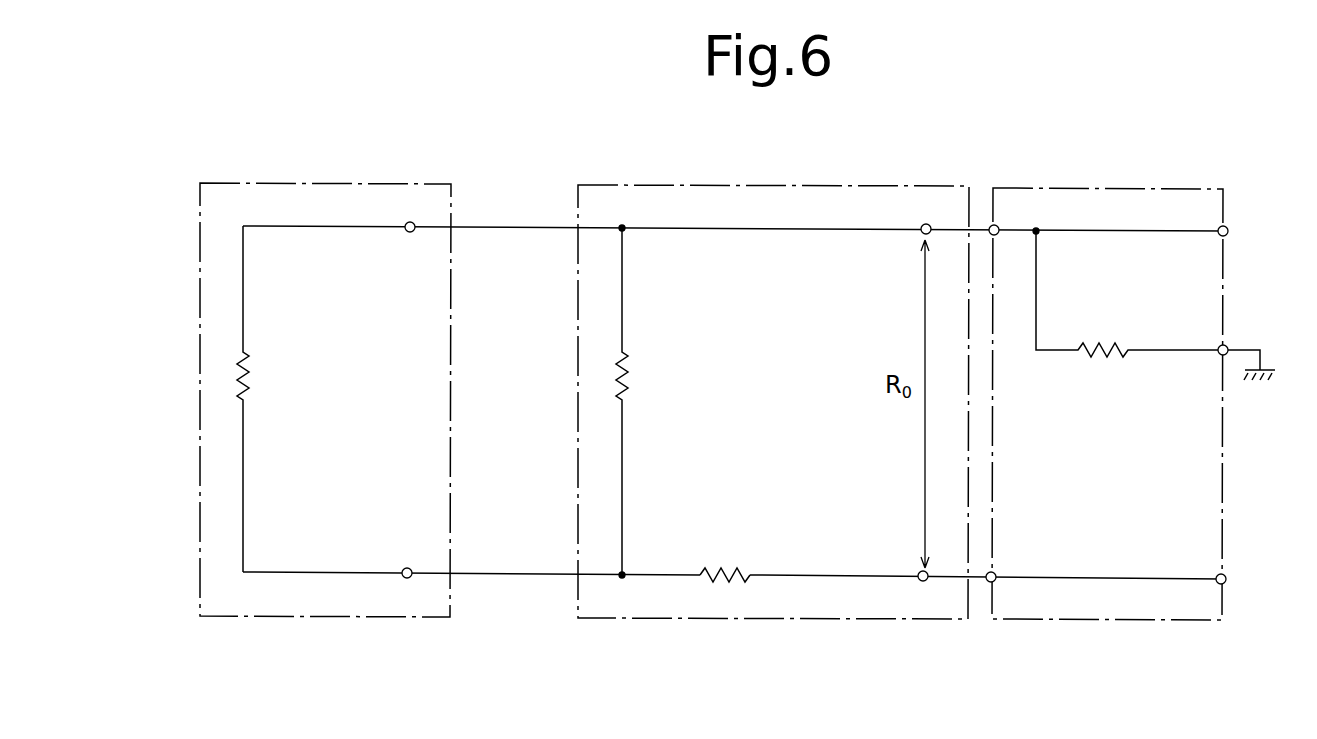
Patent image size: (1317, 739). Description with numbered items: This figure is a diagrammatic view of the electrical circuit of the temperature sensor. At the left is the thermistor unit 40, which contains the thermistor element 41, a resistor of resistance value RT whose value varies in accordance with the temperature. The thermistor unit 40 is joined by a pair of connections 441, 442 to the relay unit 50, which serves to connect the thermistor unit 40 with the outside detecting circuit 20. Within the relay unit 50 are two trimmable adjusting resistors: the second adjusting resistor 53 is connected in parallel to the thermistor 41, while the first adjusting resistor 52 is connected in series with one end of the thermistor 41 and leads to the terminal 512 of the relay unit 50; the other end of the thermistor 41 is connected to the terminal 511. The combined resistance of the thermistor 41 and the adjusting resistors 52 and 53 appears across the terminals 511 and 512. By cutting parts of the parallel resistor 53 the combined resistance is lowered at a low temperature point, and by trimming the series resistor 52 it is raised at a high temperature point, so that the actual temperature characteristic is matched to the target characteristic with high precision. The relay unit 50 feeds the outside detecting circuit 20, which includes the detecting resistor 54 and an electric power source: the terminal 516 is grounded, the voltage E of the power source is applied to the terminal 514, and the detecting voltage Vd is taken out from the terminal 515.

The thermistor unit 40 is at (378, 617).
The thermistor element 41 is at (237, 372).
The lead wire 441 is at (512, 226).
The lead wire 442 is at (523, 577).
The relay unit 50 is at (830, 185).
The second adjusting resistor 53 is at (615, 372).
The first adjusting resistor 52 is at (720, 580).
The terminal 511 is at (930, 224).
The terminal 512 is at (930, 582).
The outside detecting circuit 20 is at (1128, 186).
The terminal 515 is at (1220, 226).
The terminal 516 is at (1222, 345).
The terminal 514 is at (1217, 585).
The detecting resistor 54 is at (1125, 309).